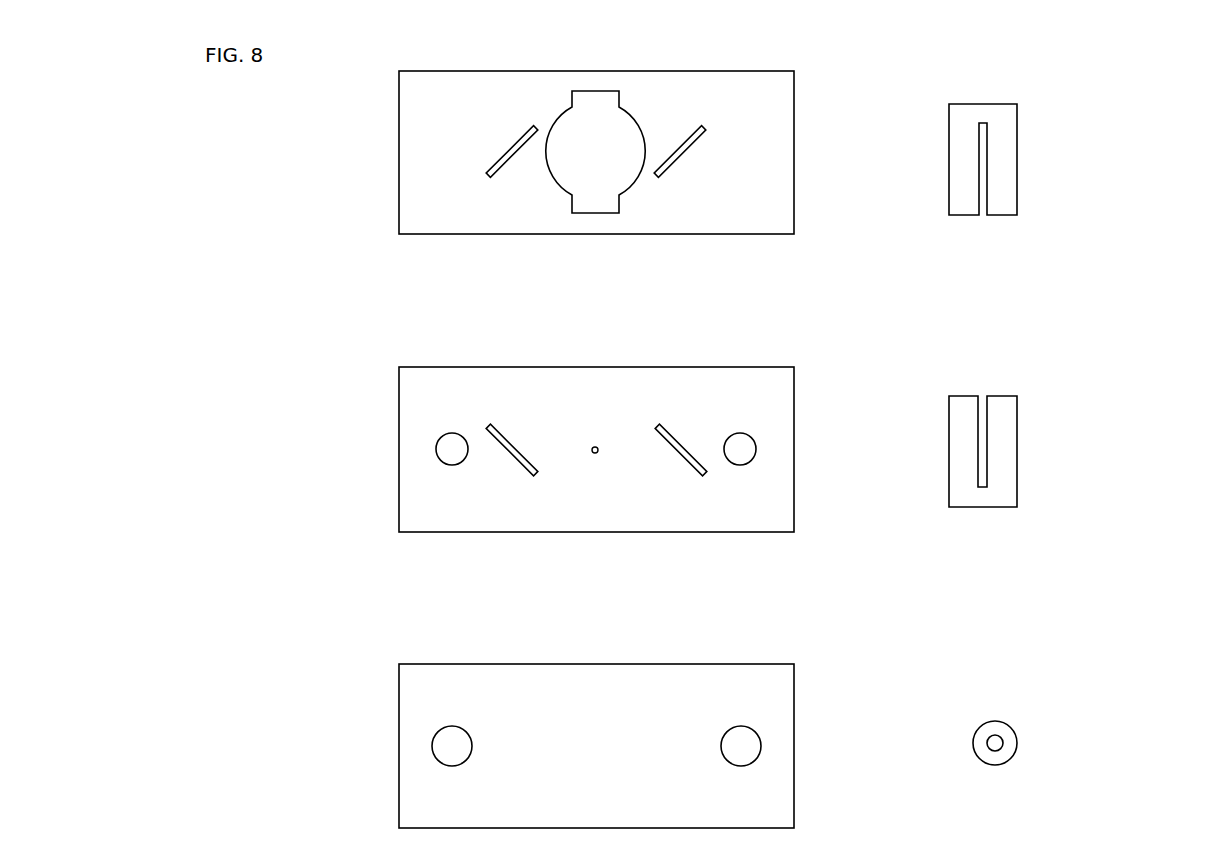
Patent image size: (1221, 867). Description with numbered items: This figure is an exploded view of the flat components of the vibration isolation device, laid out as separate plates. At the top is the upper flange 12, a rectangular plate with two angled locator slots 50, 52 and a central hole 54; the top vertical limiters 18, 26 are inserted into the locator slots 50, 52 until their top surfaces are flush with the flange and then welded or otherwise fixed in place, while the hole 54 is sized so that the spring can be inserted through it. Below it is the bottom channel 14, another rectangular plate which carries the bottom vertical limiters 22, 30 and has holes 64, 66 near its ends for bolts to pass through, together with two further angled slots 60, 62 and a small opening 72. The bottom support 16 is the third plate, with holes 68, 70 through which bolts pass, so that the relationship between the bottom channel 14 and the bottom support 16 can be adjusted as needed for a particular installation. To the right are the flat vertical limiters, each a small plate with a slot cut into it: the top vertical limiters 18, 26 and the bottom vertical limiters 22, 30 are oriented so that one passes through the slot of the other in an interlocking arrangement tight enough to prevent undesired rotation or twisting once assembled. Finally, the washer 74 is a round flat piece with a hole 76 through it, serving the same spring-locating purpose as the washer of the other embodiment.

The upper flange 12 is at (780, 108).
The bottom channel 14 is at (788, 390).
The bottom support 16 is at (785, 700).
The top vertical limiter 18 is at (1049, 451).
The top vertical limiter 26 is at (1002, 448).
The bottom vertical limiter 22 is at (1061, 159).
The bottom vertical limiter 30 is at (1007, 170).
The locator slot 50 is at (683, 143).
The locator slot 52 is at (503, 148).
The hole 54 is at (556, 120).
The angled slot 60 is at (678, 443).
The angled slot 62 is at (505, 432).
The hole 64 is at (746, 452).
The hole 66 is at (447, 447).
The hole 68 is at (752, 749).
The hole 70 is at (440, 742).
The pin hole 72 is at (599, 452).
The washer 74 is at (1012, 743).
The hole 76 is at (1000, 735).